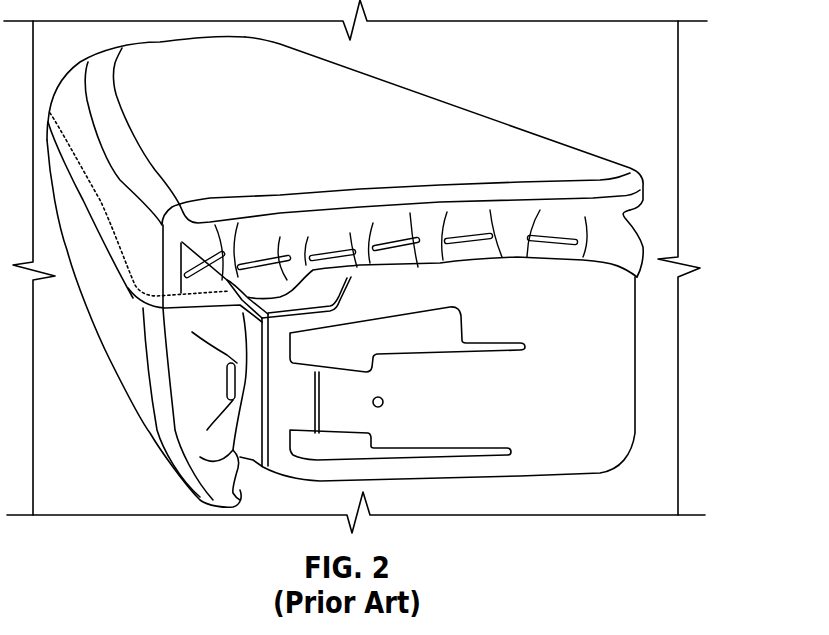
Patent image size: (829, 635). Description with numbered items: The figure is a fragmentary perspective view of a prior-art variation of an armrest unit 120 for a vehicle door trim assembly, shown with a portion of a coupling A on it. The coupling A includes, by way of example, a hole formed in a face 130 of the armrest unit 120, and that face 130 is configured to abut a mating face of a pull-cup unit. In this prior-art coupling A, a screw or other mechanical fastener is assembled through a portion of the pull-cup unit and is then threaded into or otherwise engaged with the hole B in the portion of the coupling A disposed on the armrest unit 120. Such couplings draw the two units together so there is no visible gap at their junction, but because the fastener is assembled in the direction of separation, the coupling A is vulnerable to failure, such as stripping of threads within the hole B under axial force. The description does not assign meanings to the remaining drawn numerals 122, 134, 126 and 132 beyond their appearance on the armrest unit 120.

The armrest unit 120 is at (407, 271).
The cushion top surface 122 is at (222, 104).
The top cover panel 134 is at (438, 132).
The side flap 126 is at (110, 283).
The face 130 is at (448, 373).
The lower body 132 is at (652, 374).
The coupling A is at (440, 331).
The hole B is at (383, 407).